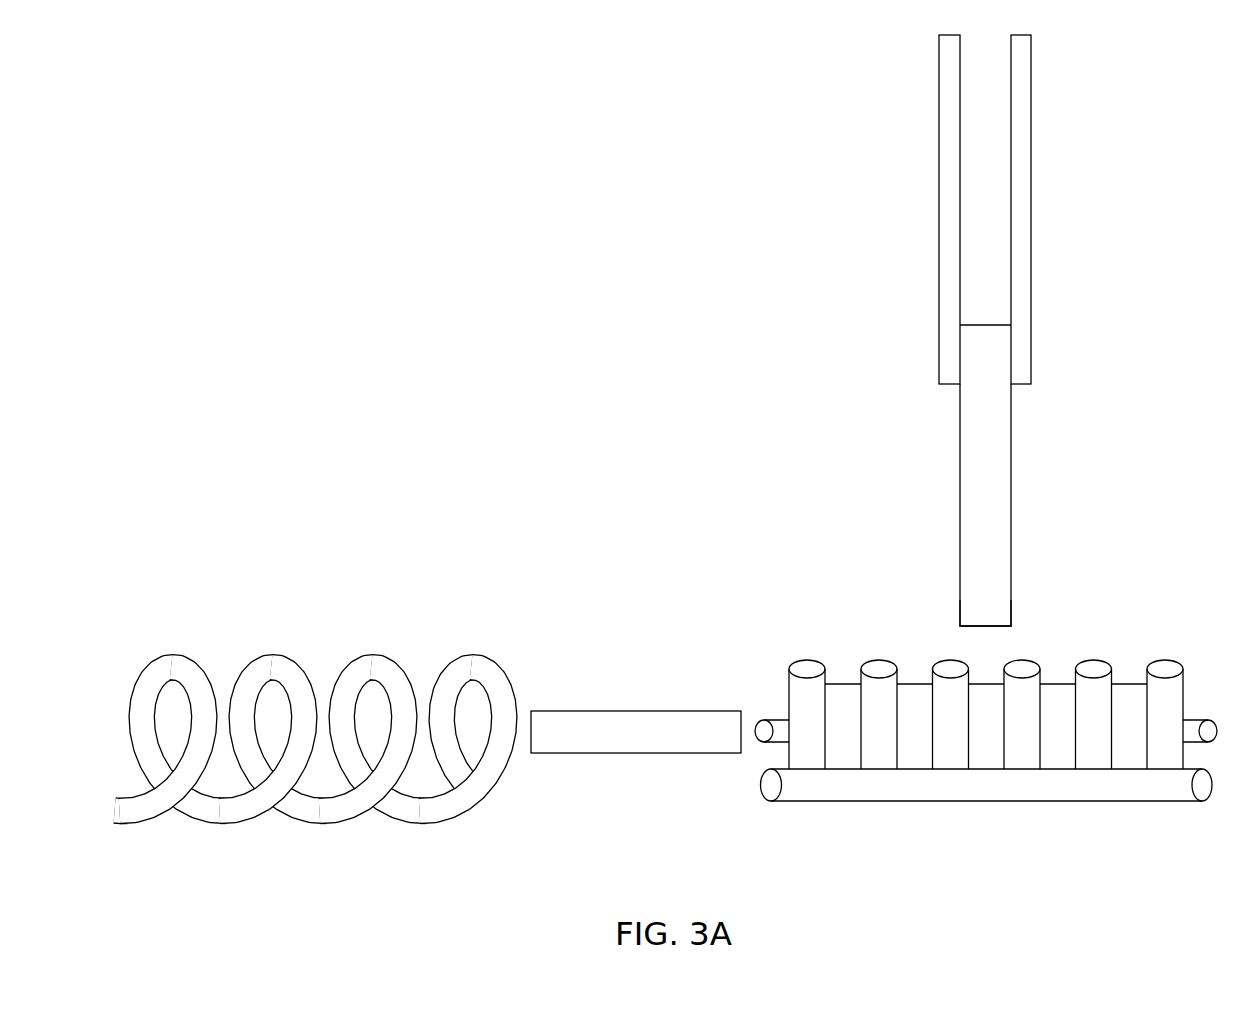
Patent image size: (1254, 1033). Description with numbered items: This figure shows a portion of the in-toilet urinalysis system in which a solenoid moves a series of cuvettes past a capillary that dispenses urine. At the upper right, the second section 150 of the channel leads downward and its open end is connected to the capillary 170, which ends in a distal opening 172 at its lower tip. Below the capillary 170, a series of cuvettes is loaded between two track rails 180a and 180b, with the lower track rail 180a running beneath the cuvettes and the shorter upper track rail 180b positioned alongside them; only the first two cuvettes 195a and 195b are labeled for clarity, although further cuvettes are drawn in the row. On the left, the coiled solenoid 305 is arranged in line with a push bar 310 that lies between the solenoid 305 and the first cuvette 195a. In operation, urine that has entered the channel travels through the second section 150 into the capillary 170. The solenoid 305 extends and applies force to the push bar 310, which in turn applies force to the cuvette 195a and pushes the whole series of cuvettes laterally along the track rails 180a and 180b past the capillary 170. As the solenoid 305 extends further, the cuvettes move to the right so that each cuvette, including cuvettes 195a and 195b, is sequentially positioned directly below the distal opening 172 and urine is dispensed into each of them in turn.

The second section 150 is at (939, 205).
The capillary 170 is at (1012, 433).
The distal opening 172 is at (987, 625).
The track rail 180a is at (908, 788).
The track rail 180b is at (778, 732).
The cuvette 195a is at (808, 658).
The cuvette 195b is at (897, 658).
The solenoid 305 is at (322, 824).
The push bar 310 is at (630, 753).